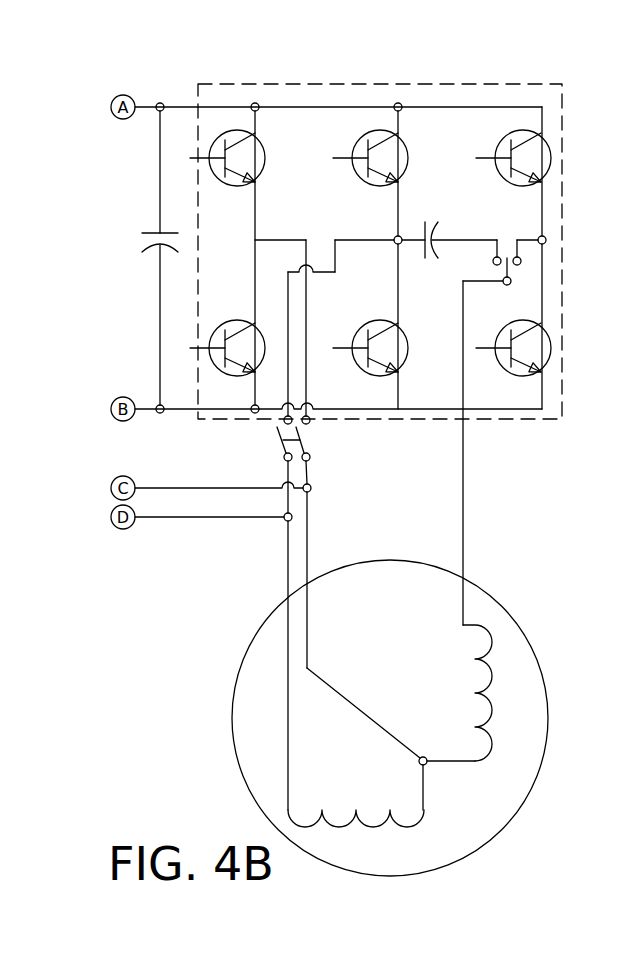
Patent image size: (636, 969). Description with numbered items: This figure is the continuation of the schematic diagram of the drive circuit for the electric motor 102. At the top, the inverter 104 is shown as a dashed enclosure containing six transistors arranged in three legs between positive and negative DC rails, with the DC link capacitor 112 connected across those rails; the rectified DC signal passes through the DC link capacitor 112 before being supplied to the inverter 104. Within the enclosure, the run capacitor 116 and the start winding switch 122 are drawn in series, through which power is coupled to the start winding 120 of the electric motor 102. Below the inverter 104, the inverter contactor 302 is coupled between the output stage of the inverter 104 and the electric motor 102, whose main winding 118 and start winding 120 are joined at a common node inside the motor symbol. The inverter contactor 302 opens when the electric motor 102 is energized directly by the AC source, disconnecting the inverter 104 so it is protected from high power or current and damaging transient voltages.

The electric motor 102 is at (434, 732).
The inverter 104 is at (413, 219).
The DC link capacitor 112 is at (157, 232).
The run capacitor 116 is at (445, 232).
The main winding 118 is at (410, 827).
The start winding 120 is at (475, 695).
The start winding switch 122 is at (510, 268).
The inverter contactor 302 is at (307, 442).